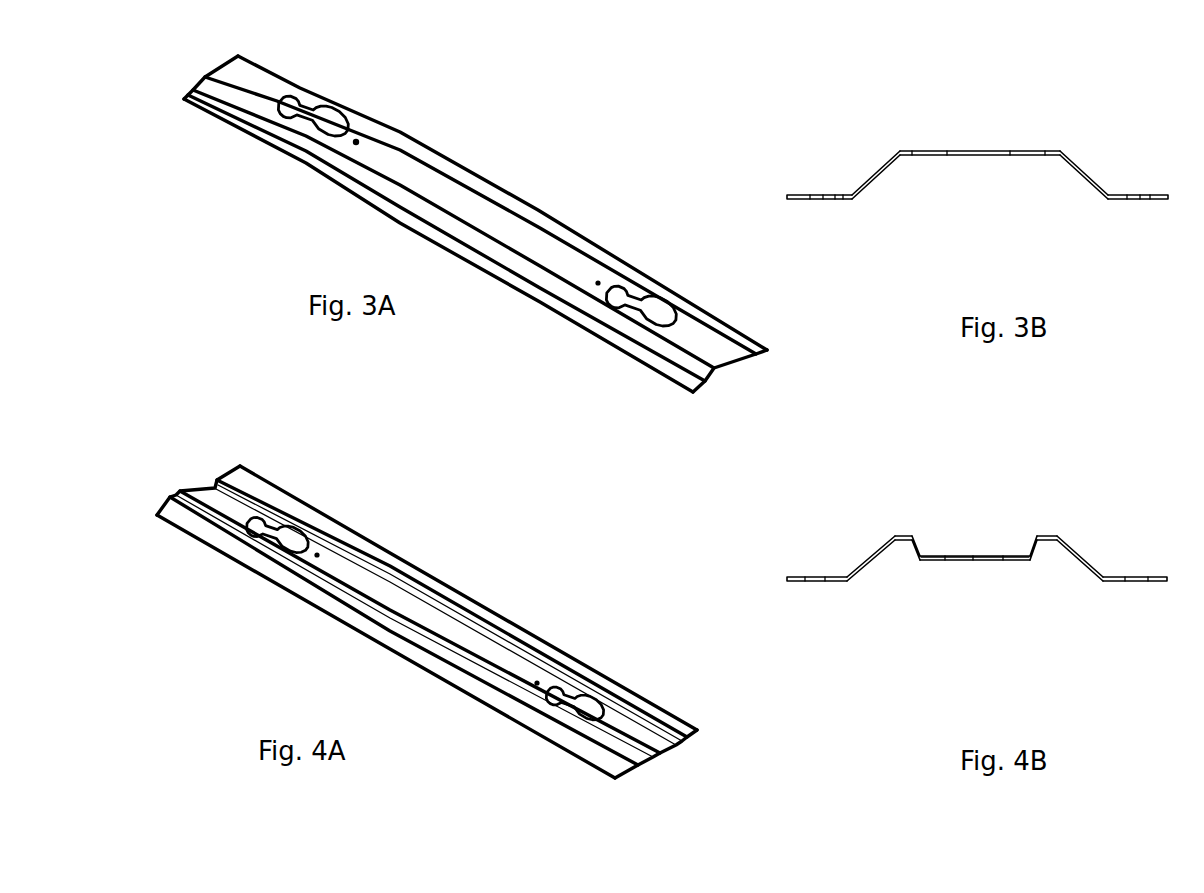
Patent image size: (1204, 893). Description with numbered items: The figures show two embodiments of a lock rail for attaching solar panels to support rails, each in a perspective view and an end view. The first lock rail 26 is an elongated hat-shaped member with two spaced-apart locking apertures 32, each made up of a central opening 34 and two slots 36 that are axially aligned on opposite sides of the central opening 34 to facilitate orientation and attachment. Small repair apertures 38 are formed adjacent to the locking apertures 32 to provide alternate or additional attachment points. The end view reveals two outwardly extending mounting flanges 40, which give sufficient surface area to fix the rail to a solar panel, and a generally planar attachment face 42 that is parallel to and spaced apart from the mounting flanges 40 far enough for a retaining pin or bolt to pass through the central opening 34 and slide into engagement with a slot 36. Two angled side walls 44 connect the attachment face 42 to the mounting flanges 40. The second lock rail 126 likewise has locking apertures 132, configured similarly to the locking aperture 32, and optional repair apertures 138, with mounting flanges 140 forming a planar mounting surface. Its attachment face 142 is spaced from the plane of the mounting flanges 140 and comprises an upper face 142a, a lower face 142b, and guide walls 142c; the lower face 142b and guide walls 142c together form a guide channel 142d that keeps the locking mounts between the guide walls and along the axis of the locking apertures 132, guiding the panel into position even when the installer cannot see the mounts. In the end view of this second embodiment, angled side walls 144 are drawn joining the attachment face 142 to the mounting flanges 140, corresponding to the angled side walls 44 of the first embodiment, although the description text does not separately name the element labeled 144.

In FIG. 3A, the lock rail 26 is at (543, 172).
In FIG. 3B, the lock rail 26 is at (1088, 110).
In FIG. 3A, the locking aperture 32 is at (272, 88).
In FIG. 3A, the central opening 34 is at (313, 120).
In FIG. 3B, the central opening 34 is at (927, 150).
In FIG. 3A, the slot 36 is at (296, 98).
In FIG. 3B, the slot 36 is at (965, 151).
In FIG. 3A, the repair aperture 38 is at (358, 141).
In FIG. 3A, the mounting flange 40 is at (770, 350).
In FIG. 3B, the mounting flange 40 is at (819, 200).
In FIG. 3A, the attachment face 42 is at (421, 182).
In FIG. 3B, the attachment face 42 is at (1057, 151).
In FIG. 3B, the angled side wall 44 is at (877, 182).
In FIG. 4A, the lock rail 126 is at (508, 580).
In FIG. 4B, the lock rail 126 is at (1127, 477).
In FIG. 4A, the locking aperture 132 is at (240, 513).
In FIG. 4B, the locking aperture 132 is at (990, 568).
In FIG. 4A, the repair aperture 138 is at (317, 555).
In FIG. 4A, the mounting flange 140 is at (502, 715).
In FIG. 4B, the mounting flange 140 is at (820, 582).
In FIG. 4A, the attachment face 142 is at (370, 583).
In FIG. 4B, the attachment face 142 is at (887, 477).
In FIG. 4B, the upper face 142a is at (905, 536).
In FIG. 4B, the lower face 142b is at (925, 548).
In FIG. 4B, the guide wall 142c is at (912, 553).
In FIG. 4A, the guide channel 142d is at (640, 735).
In FIG. 4B, the guide channel 142d is at (990, 512).
In FIG. 4B, the web 144 is at (872, 557).